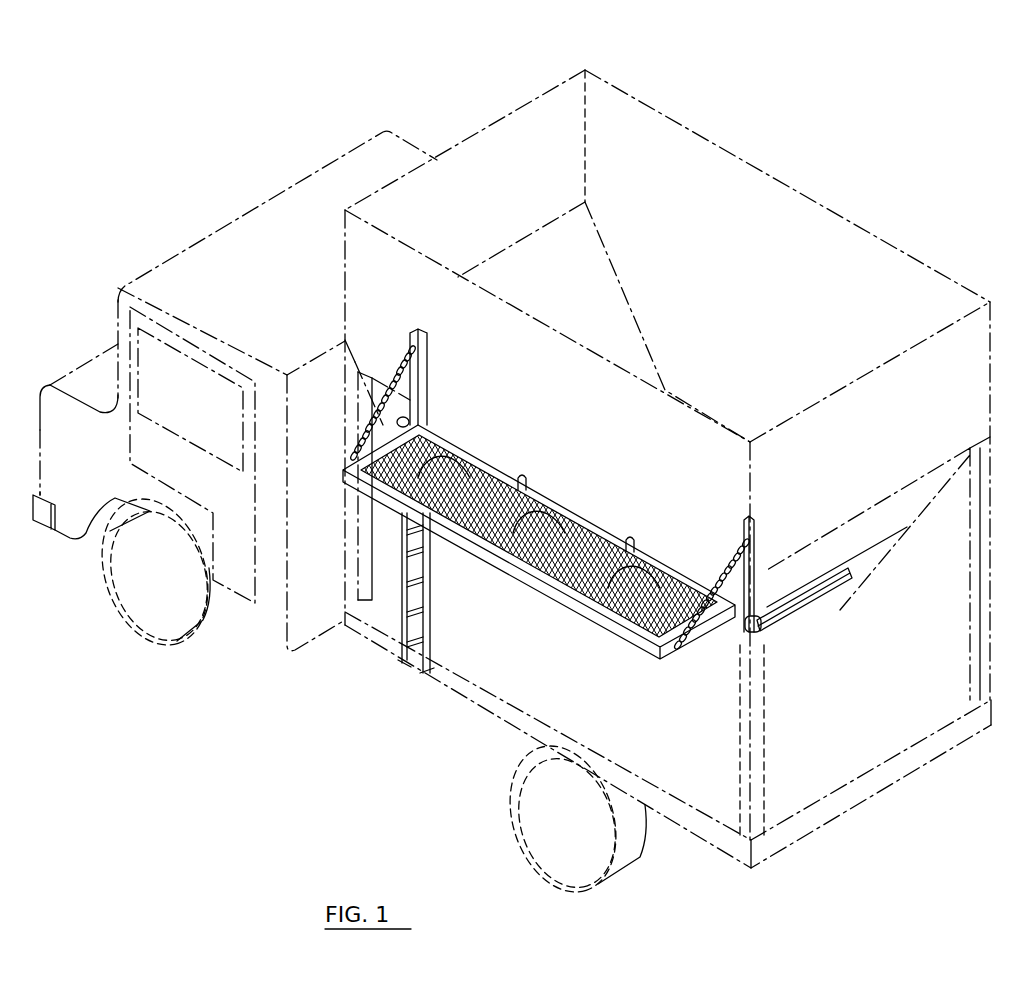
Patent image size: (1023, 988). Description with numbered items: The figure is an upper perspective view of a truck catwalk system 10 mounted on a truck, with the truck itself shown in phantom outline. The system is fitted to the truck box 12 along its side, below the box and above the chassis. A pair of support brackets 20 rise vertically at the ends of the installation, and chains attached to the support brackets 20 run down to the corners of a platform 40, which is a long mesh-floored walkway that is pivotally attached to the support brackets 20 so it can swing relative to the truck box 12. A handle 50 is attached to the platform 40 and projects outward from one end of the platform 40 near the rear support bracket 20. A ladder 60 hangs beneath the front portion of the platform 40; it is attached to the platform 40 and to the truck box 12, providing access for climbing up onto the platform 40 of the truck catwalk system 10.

The truck catwalk system 10 is at (517, 469).
The truck box 12 is at (799, 167).
The support brackets 20 is at (422, 332).
The platform 40 is at (683, 633).
The handle 50 is at (807, 600).
The ladder 60 is at (432, 603).